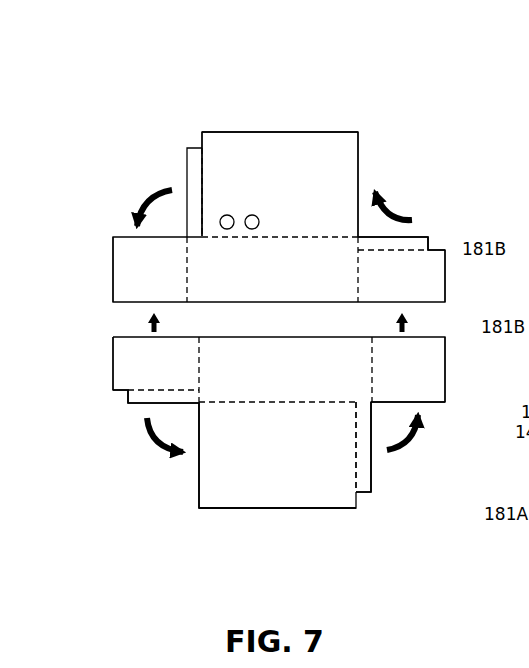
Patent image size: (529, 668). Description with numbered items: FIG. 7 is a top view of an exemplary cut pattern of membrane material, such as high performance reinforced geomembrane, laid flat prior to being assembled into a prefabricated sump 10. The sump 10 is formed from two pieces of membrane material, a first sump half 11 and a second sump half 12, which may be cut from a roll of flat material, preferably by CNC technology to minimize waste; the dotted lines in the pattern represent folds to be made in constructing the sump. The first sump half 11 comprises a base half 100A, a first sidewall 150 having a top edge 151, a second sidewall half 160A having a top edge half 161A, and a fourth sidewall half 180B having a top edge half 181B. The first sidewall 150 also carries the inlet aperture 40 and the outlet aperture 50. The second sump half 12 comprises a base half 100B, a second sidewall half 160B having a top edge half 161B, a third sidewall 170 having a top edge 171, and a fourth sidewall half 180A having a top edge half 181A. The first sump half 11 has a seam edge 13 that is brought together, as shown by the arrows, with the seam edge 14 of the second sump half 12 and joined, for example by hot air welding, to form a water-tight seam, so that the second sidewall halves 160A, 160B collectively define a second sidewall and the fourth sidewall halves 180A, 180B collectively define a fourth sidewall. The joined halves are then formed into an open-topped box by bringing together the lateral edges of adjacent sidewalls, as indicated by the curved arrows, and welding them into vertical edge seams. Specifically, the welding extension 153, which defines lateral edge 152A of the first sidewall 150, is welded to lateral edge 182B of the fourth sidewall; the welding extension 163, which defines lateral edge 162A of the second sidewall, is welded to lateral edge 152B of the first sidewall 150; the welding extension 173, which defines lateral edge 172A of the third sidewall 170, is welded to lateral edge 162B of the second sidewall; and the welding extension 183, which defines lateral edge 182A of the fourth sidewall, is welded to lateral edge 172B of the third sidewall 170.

The sump 10 is at (135, 115).
The first sump half 11 is at (348, 167).
The second sump half 12 is at (333, 483).
The seam edge 13 is at (120, 306).
The seam edge 14 is at (142, 333).
The inlet aperture 40 is at (227, 215).
The outlet aperture 50 is at (250, 215).
The base half 100A is at (272, 269).
The base half 100B is at (285, 369).
The first sidewall 150 is at (280, 184).
The top edge 151 is at (289, 128).
The lateral edge 152A is at (185, 177).
The lateral edge 152B is at (362, 147).
The welding extension 153 is at (196, 149).
The second sidewall half 160A is at (401, 276).
The second sidewall half 160B is at (408, 369).
The top edge half 161A is at (447, 275).
The top edge half 161B is at (447, 367).
The lateral edge 162A is at (425, 237).
The lateral edge 162B is at (435, 407).
The welding extension 163 is at (410, 237).
The third sidewall 170 is at (277, 455).
The top edge 171 is at (282, 512).
The lateral edge 172A is at (374, 478).
The lateral edge 172B is at (197, 491).
The welding extension 173 is at (360, 428).
The fourth sidewall half 180A is at (156, 370).
The fourth sidewall half 180B is at (150, 269).
The top edge half 181A is at (111, 362).
The top edge half 181B is at (111, 251).
The lateral edge 182A is at (135, 408).
The lateral edge 182B is at (122, 232).
The welding extension 183 is at (150, 400).